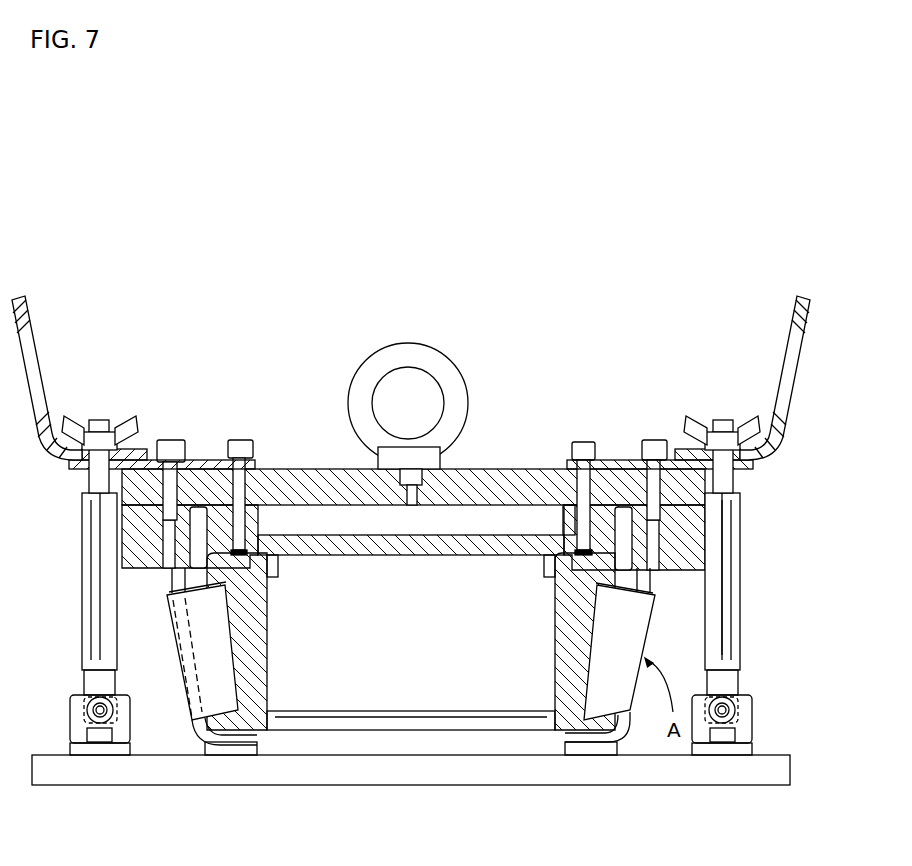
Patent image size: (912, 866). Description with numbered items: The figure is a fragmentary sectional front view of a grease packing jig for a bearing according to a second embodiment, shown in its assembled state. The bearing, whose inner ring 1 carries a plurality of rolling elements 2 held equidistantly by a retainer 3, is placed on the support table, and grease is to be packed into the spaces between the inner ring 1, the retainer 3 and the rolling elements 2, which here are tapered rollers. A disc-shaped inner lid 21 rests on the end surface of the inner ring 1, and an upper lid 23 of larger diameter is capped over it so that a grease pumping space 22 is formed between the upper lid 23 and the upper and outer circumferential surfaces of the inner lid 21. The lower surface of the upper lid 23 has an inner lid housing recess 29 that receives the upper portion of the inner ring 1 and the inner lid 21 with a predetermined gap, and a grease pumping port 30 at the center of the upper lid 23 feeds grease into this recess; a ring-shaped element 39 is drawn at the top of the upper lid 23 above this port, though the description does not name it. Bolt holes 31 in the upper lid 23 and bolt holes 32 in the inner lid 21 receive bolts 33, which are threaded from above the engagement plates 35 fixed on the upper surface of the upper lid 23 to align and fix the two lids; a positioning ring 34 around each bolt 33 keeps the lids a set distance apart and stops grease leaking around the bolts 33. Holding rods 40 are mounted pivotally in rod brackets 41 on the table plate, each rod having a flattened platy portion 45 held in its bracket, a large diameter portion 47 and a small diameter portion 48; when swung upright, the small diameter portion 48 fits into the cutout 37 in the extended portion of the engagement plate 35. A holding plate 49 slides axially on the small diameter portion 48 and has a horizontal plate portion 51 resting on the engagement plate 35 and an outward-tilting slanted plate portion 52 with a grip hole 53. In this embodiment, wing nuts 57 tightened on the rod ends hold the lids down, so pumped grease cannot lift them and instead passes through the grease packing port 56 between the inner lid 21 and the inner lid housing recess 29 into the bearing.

The inner ring 1 is at (565, 640).
The rolling elements 2 is at (605, 700).
The retainer 3 is at (623, 702).
The inner lid 21 is at (484, 545).
The grease pumping space 22 is at (285, 518).
The upper lid 23 is at (537, 478).
The inner lid housing recess 29 is at (202, 522).
The grease pumping port 30 is at (415, 497).
The bolt holes 31 is at (562, 507).
The bolt holes 32 is at (560, 560).
The bolts 33 is at (575, 515).
The positioning ring 34 is at (623, 555).
The engagement plate 35 is at (626, 480).
The cutouts 37 is at (742, 462).
The eyebolt ring 39 is at (410, 358).
The holding rods 40 is at (742, 547).
The rod brackets 41 is at (757, 727).
The platy portion 45 is at (727, 683).
The large diameter portion 47 is at (727, 582).
The small diameter portion 48 is at (722, 478).
The holding plate 49 is at (776, 442).
The horizontal plate portion 51 is at (688, 456).
The slanted plate portion 52 is at (806, 311).
The grip hole 53 is at (785, 367).
The grease packing port 56 is at (650, 600).
The wing nuts 57 is at (750, 423).